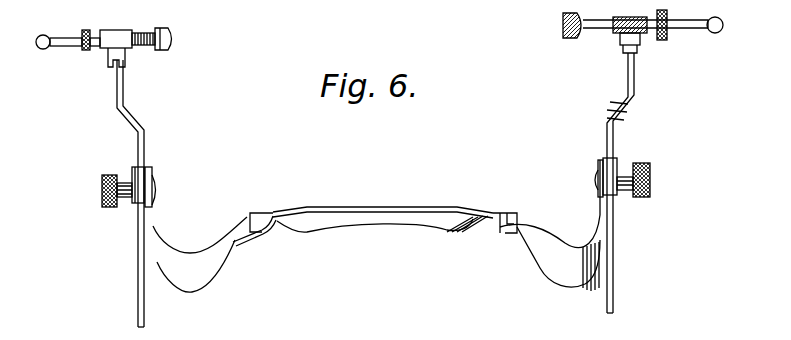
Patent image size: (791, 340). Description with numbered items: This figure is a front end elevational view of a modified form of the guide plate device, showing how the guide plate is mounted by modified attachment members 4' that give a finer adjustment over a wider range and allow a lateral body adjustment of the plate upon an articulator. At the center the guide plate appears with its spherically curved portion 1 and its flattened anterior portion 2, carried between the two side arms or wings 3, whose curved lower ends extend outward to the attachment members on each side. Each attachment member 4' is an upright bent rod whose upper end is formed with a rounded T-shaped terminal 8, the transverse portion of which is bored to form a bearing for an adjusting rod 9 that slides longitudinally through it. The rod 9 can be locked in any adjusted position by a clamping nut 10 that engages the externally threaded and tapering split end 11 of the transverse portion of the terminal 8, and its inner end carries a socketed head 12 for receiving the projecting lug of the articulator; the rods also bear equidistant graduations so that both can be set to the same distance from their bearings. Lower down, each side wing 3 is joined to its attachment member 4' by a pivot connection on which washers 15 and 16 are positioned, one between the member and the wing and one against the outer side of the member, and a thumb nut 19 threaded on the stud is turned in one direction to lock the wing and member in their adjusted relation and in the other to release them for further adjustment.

The spherically curved portion of guide plate 1 is at (327, 221).
The flattened anterior portion of guide plate 2 is at (384, 208).
The side arms or wings 3 is at (206, 280).
The modified attachment members 4' is at (375, 190).
The rounded T-shaped terminals 8 is at (122, 31).
The adjusting rods 9 is at (146, 46).
The clamping nuts 10 is at (77, 36).
The externally threaded and tapering split ends 11 is at (92, 51).
The socketed heads 12 is at (176, 40).
The washer 15 is at (148, 166).
The washer 16 is at (131, 173).
The thumb nut 19 is at (103, 206).